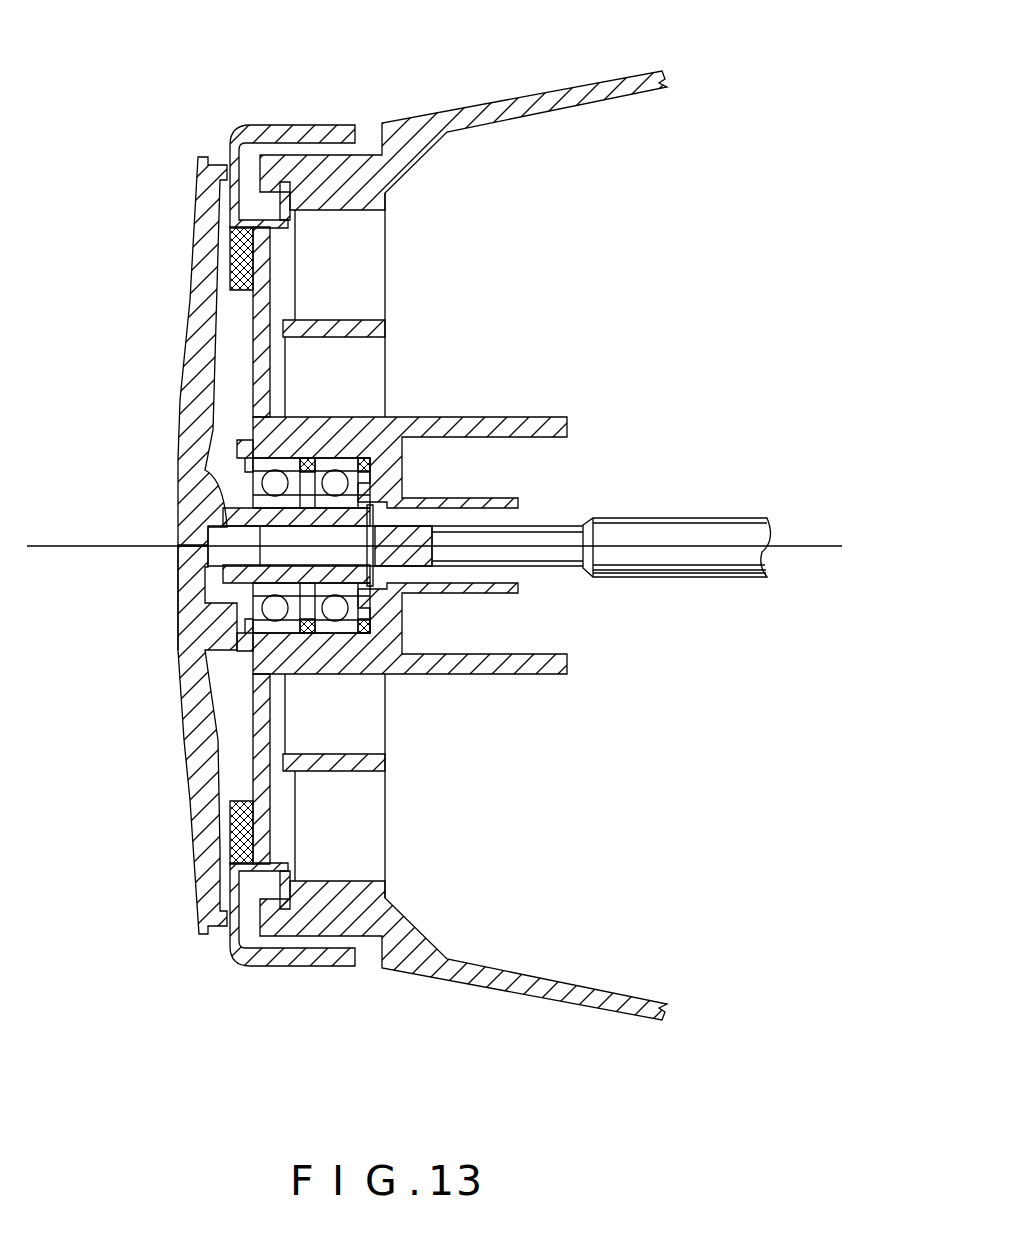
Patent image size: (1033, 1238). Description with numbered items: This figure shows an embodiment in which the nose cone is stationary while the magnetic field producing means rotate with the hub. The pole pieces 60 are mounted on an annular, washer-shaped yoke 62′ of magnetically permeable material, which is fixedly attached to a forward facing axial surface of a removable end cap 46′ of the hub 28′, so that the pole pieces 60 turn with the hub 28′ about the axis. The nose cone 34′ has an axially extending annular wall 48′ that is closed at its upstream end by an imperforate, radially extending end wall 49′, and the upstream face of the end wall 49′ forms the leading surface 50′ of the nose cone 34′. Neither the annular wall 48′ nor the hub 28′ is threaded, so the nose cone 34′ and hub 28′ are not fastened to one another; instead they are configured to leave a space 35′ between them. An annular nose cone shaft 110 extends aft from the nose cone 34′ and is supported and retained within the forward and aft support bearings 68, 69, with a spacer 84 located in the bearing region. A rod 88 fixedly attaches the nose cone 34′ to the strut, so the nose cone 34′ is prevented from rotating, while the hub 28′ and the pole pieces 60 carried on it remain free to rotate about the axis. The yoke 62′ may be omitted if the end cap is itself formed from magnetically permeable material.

The hub 28′ is at (635, 72).
The annular wall 48′ is at (322, 125).
The yoke 62′ is at (250, 225).
The pole pieces 60 is at (237, 253).
The end wall 49′ is at (190, 303).
The forward support bearing 68 is at (268, 440).
The spacer 84 is at (240, 455).
The nose cone shaft 110 is at (222, 490).
The leading surface 50′ is at (178, 602).
The nose cone 34′ is at (180, 665).
The removable end cap 46′ is at (253, 768).
The space 35′ is at (330, 940).
The aft support bearing 69 is at (350, 458).
The rod 88 is at (687, 577).